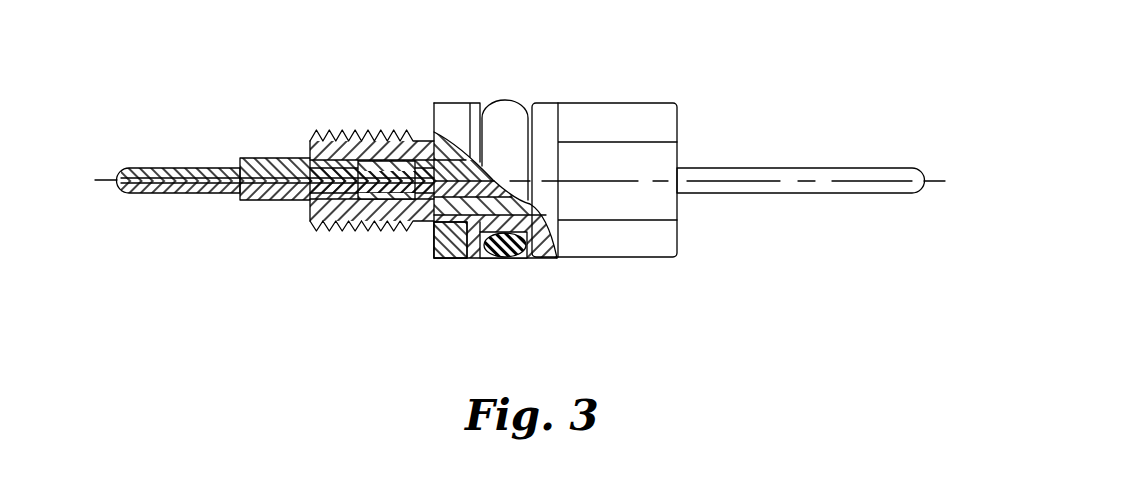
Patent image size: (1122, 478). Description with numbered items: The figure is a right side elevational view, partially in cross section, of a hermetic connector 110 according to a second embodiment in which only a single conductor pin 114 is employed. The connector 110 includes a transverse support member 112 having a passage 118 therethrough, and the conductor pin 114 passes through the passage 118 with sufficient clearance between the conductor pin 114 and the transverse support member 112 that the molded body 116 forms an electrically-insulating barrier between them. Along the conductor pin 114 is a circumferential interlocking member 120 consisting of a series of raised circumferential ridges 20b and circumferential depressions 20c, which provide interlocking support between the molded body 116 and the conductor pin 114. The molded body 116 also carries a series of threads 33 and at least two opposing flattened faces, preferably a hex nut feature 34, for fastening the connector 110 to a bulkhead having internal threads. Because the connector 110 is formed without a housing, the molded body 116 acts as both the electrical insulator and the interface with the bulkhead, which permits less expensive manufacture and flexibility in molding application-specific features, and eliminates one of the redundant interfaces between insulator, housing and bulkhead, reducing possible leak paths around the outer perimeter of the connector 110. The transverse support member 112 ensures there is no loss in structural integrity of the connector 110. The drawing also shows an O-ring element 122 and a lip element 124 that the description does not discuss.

The connector 110 is at (520, 186).
The transverse support member 112 is at (457, 102).
The conductor pin 114 is at (162, 193).
The molded body 116 is at (418, 222).
The passage 118 is at (465, 258).
The circumferential interlocking member 120 is at (338, 130).
The O-ring 122 is at (485, 258).
The sealing lip 124 is at (512, 100).
The threads 33 is at (375, 130).
The hex nut feature 34 is at (620, 103).
The raised circumferential ridges 20b is at (352, 228).
The circumferential depressions 20c is at (388, 230).